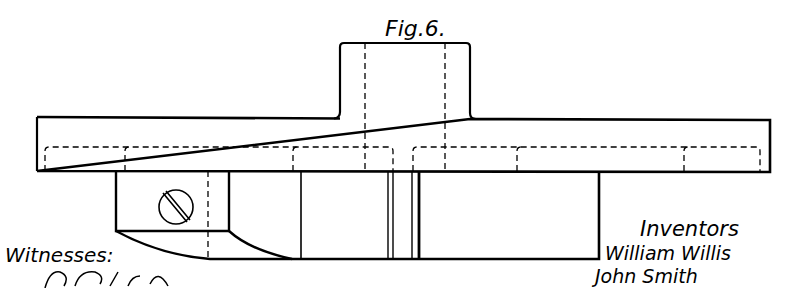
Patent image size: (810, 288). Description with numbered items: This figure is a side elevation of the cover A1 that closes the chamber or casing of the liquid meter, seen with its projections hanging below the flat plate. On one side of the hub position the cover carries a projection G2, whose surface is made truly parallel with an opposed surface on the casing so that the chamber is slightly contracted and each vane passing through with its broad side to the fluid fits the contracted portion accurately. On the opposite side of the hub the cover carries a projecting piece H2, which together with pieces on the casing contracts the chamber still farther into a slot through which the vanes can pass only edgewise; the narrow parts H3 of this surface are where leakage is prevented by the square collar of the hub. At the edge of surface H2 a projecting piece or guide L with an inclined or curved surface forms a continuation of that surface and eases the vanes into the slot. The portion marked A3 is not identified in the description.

The cover A1 is at (389, 131).
The upper block / boss A3 is at (405, 107).
The projection G2 is at (152, 172).
The projecting piece or guide L is at (208, 215).
The projecting piece H2 is at (450, 215).
The narrow parts H3 is at (406, 259).